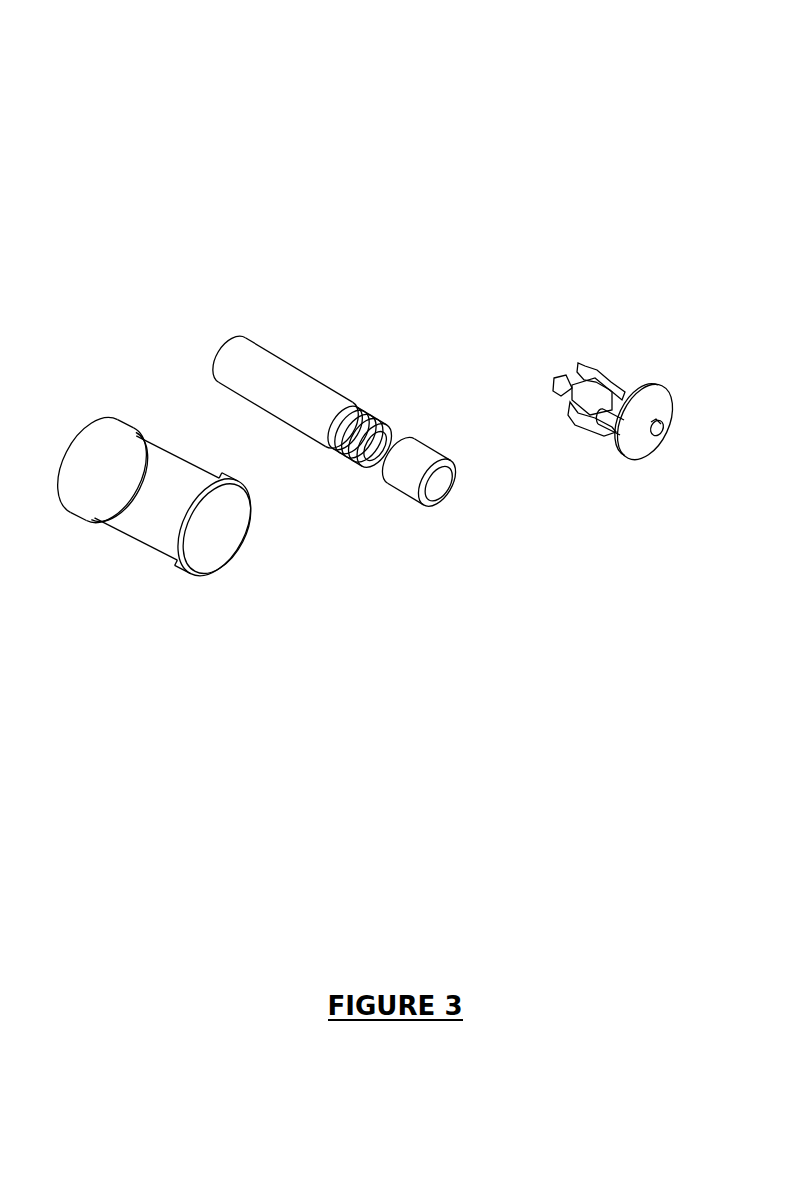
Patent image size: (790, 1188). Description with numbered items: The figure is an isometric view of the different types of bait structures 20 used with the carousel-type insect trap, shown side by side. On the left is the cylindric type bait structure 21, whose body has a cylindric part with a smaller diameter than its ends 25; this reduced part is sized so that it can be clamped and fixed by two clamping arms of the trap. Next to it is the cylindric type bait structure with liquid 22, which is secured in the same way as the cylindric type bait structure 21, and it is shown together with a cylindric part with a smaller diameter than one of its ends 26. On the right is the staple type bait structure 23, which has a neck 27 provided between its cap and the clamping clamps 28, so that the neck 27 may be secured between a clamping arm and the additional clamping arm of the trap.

The bait structure 20 is at (351, 150).
The cylindric type bait structure 21 is at (133, 603).
The cylindric type bait structure with liquid 22 is at (440, 520).
The staple type bait structure 23 is at (619, 473).
The cylindric part with a smaller diameter than its ends 25 is at (118, 545).
The cylindric part with a smaller diameter than one of its ends 26 is at (314, 447).
The neck 27 is at (592, 440).
The clamping clamps 28 is at (613, 362).